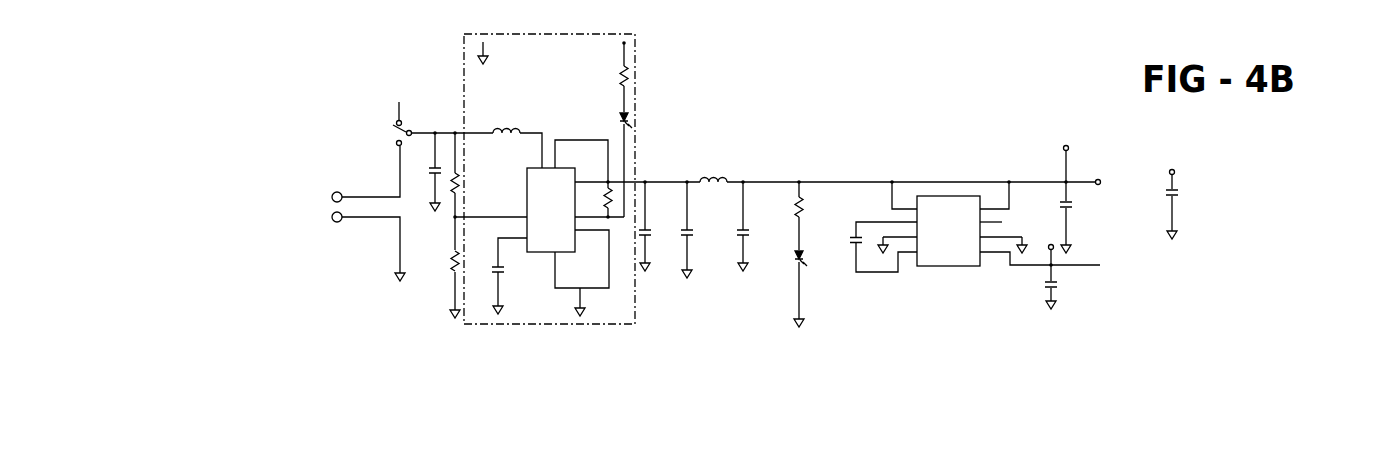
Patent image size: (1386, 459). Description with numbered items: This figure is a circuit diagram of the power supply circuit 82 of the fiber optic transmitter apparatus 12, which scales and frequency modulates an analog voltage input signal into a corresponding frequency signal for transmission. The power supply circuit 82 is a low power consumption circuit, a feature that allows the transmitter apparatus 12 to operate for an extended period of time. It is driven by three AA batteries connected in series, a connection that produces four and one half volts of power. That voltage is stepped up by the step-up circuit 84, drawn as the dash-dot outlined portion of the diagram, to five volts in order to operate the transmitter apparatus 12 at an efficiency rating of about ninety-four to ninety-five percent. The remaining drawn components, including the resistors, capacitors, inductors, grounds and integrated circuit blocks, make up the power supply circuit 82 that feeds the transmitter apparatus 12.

The power supply circuit 82 is at (733, 69).
The step-up circuit 84 is at (635, 302).
The transmitter apparatus 12 is at (900, 316).